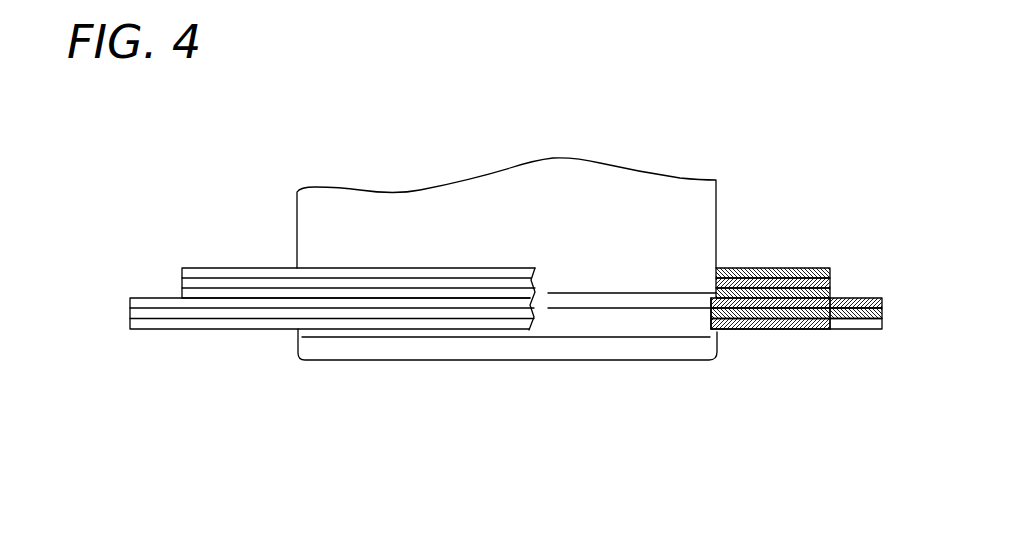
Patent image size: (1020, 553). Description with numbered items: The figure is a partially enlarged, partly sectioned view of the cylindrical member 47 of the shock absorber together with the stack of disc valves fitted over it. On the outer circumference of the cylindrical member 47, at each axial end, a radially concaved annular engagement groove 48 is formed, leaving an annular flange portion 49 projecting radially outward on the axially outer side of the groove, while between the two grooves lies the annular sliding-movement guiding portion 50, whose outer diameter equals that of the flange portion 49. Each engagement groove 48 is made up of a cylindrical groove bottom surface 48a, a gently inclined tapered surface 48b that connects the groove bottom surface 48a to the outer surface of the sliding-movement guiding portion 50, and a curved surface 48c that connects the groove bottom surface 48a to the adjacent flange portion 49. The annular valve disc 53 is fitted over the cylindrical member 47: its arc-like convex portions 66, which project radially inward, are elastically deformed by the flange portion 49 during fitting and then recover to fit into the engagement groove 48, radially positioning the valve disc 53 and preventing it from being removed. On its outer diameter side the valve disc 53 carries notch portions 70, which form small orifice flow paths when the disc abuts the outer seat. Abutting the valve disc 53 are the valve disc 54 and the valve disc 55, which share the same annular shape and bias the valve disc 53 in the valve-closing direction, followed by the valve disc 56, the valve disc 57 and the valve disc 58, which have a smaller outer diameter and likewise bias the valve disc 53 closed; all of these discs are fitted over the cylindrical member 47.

The cylindrical member 47 is at (790, 172).
The engagement groove 48 is at (297, 330).
The groove bottom surface 48a is at (737, 330).
The tapered surface 48b is at (748, 268).
The curved surface 48c is at (717, 332).
The flange portion 49 is at (297, 335).
The sliding-movement guiding portion 50 is at (310, 227).
The valve disc 53 is at (130, 327).
The valve disc 54 is at (128, 313).
The valve disc 55 is at (127, 303).
The valve disc 56 is at (172, 294).
The valve disc 57 is at (177, 288).
The valve disc 58 is at (180, 280).
The convex portion 66 is at (710, 322).
The notch portion 70 is at (853, 323).